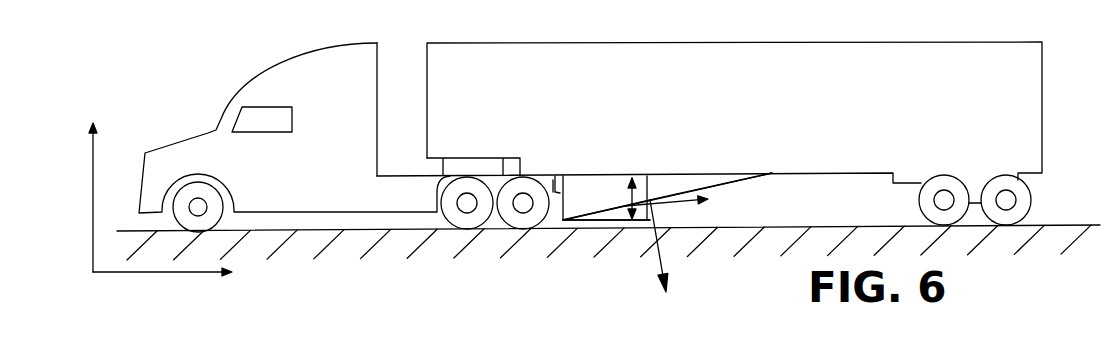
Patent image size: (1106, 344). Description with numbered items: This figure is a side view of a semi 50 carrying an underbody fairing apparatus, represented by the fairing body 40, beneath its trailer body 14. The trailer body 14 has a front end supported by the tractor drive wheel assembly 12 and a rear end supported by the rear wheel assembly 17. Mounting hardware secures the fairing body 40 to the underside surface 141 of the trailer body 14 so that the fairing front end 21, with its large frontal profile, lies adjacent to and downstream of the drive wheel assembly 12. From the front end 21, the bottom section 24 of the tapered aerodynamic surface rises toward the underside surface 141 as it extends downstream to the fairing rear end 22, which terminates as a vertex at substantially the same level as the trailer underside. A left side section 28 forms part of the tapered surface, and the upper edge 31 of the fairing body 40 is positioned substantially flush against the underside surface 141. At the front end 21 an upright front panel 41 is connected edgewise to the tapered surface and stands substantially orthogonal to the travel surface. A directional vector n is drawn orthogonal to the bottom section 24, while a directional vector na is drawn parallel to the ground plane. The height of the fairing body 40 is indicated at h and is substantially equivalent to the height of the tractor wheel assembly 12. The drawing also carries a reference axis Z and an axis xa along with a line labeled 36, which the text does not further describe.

The semi 50 is at (198, 90).
The trailer body 14 is at (767, 80).
The underside surface 141 is at (851, 173).
The tractor drive wheel assembly 12 is at (463, 221).
The rear wheel assembly 17 is at (1033, 193).
The front panel 41 is at (556, 173).
The upper edge 31 is at (600, 173).
The front end 21 is at (557, 228).
The inclined panel 36 is at (775, 177).
The left side section 28 is at (585, 208).
The directional vector na is at (680, 193).
The height of the fairing body h is at (640, 190).
The bottom section 24 is at (708, 190).
The rear end 22 is at (758, 151).
The directional vector n is at (665, 268).
The fairing body 40 is at (712, 257).
The vertical axis Z is at (95, 162).
The longitudinal axis xa is at (147, 277).